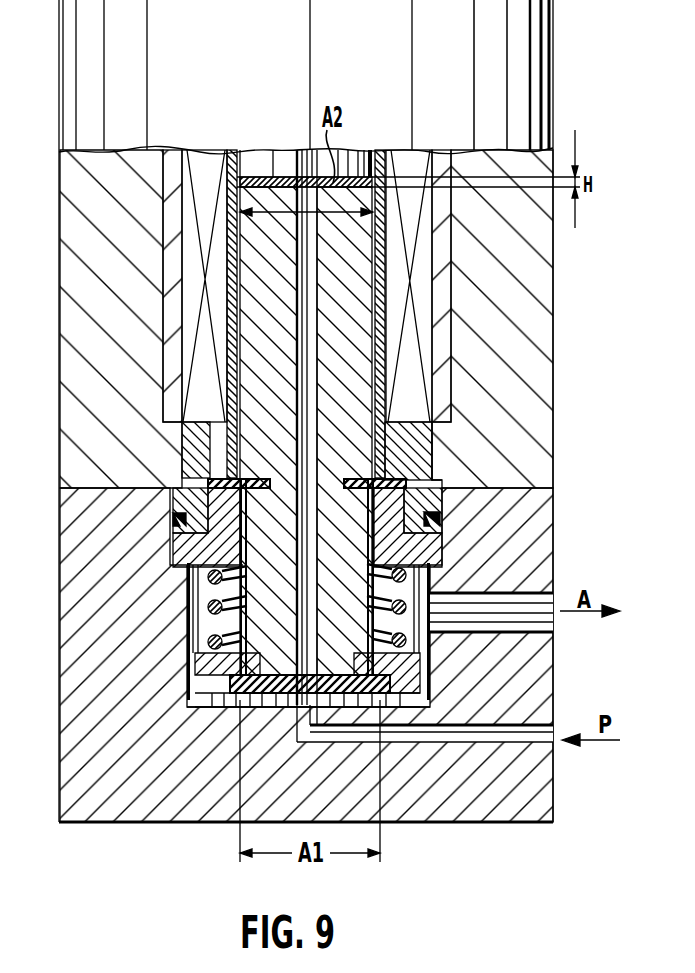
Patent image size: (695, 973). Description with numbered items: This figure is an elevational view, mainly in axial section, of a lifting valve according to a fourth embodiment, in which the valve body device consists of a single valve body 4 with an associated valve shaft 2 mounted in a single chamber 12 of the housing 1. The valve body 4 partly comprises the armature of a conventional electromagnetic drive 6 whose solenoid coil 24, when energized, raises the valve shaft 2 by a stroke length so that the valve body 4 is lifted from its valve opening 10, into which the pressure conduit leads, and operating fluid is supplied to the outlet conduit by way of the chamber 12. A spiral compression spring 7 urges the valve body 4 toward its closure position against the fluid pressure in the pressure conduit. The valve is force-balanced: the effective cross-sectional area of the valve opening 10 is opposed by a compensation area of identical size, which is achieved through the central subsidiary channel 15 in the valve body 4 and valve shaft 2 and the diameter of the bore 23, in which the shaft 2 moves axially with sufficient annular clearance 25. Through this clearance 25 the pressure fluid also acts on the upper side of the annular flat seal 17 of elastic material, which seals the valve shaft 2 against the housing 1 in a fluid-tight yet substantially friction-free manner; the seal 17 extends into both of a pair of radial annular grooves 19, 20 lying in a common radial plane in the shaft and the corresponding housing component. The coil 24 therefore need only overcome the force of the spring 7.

The housing 1 is at (80, 545).
The valve shaft 2 is at (257, 187).
The valve body 4 is at (187, 660).
The electromagnetic drive 6 is at (523, 32).
The spiral compression spring 7 is at (413, 577).
The valve opening 10 is at (270, 700).
The upper chamber 12 is at (413, 622).
The central subsidiary channel 15 is at (294, 188).
The annular flat seal 17 is at (213, 483).
The radial annular groove 19 is at (366, 443).
The radial annular groove 20 is at (397, 478).
The bore 23 is at (274, 185).
The solenoid coil 24 is at (405, 162).
The annular clearance 25 is at (238, 392).